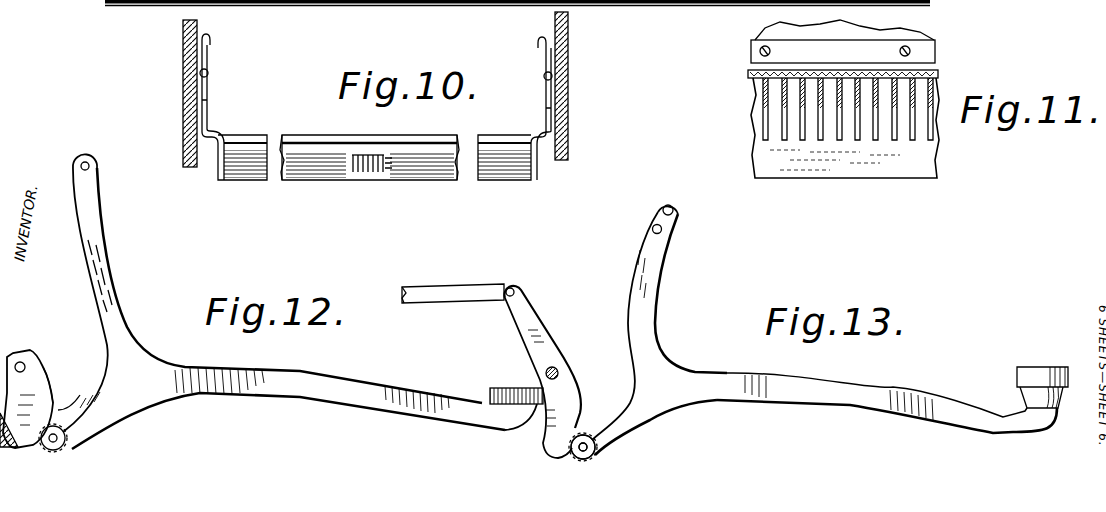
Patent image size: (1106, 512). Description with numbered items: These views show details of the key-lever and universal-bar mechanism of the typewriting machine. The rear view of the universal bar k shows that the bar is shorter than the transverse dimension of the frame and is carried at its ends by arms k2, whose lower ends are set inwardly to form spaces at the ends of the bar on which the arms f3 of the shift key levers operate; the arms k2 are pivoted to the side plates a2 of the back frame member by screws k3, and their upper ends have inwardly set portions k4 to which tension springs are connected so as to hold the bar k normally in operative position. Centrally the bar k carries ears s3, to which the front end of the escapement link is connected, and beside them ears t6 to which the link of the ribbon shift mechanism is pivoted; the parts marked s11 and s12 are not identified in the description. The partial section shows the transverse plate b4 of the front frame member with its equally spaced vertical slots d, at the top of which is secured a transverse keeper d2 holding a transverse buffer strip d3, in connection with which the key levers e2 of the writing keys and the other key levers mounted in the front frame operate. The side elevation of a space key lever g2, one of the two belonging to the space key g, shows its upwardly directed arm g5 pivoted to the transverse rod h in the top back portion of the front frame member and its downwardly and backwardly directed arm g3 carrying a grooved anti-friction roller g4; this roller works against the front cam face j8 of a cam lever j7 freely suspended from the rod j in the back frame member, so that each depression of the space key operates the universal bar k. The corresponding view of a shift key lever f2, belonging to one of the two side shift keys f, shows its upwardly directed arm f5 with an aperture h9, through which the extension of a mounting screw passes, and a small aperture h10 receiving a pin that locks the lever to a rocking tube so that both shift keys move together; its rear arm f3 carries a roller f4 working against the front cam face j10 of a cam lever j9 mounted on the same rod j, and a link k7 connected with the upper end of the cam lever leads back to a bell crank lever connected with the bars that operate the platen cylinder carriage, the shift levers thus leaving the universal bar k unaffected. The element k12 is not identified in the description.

In FIG. 10, the side plates a2 is at (183, 26).
In FIG. 10, the inwardly set portions k4 is at (212, 37).
In FIG. 10, the screws k3 is at (206, 73).
In FIG. 10, the arms k2 is at (206, 100).
In FIG. 10, the universal bar k is at (300, 178).
In FIG. 10, the ears s3 is at (356, 174).
In FIG. 10, the ears t6 is at (382, 172).
In FIG. 10, the rail s11 is at (422, 3).
In FIG. 10, the rail strip s12 is at (517, 19).
In FIG. 11, the transverse plate b4 is at (913, 170).
In FIG. 11, the transverse keeper d2 is at (925, 67).
In FIG. 11, the transverse buffer strip d3 is at (938, 73).
In FIG. 11, the vertical slots d is at (850, 140).
In FIG. 11, the key levers e2 is at (778, 100).
In FIG. 12, the upwardly directed arms g5 is at (100, 257).
In FIG. 12, the transverse rod h is at (90, 167).
In FIG. 12, the space key levers g2 is at (393, 388).
In FIG. 12, the downwardly and backwardly directed arms g3 is at (88, 427).
In FIG. 12, the grooved anti-friction rollers g4 is at (65, 450).
In FIG. 12, the rod j is at (22, 365).
In FIG. 12, the cam levers j7 is at (47, 380).
In FIG. 12, the front cam faces j8 is at (75, 383).
In FIG. 12, the links k7 is at (455, 298).
In FIG. 12, the cam levers j9 is at (547, 337).
In FIG. 12, the front cam faces j10 is at (587, 420).
In FIG. 12, the space key g is at (492, 400).
In FIG. 12, the bracket k12 is at (12, 447).
In FIG. 13, the upwardly directed arms f5 is at (657, 277).
In FIG. 13, the apertures h9 is at (673, 207).
In FIG. 13, the small apertures h10 is at (655, 226).
In FIG. 13, the shift key levers f2 is at (930, 398).
In FIG. 13, the downwardly and backwardly directed arms f3 is at (653, 420).
In FIG. 13, the grooved anti-friction rollers f4 is at (596, 459).
In FIG. 13, the side shift keys f is at (1030, 367).